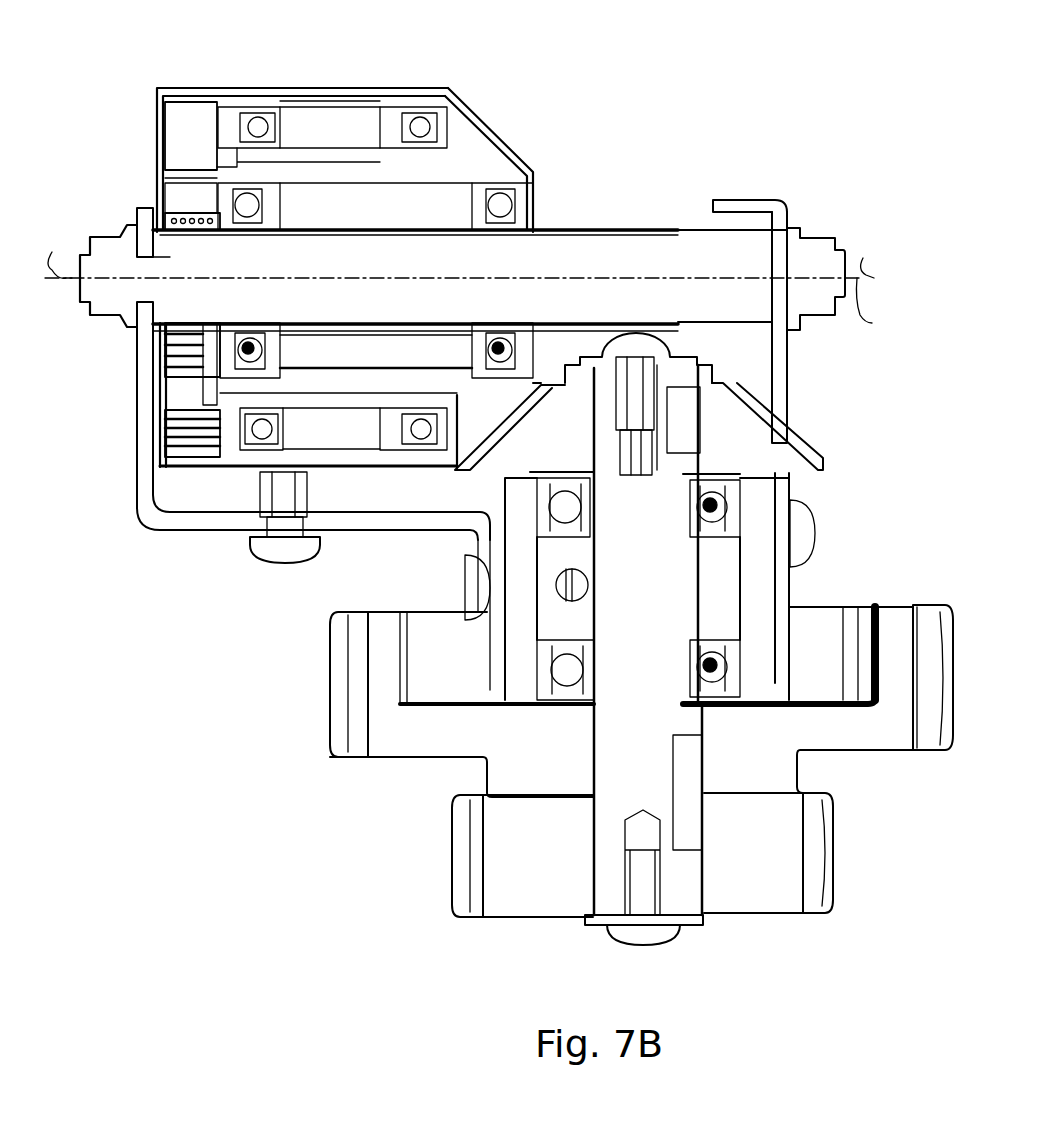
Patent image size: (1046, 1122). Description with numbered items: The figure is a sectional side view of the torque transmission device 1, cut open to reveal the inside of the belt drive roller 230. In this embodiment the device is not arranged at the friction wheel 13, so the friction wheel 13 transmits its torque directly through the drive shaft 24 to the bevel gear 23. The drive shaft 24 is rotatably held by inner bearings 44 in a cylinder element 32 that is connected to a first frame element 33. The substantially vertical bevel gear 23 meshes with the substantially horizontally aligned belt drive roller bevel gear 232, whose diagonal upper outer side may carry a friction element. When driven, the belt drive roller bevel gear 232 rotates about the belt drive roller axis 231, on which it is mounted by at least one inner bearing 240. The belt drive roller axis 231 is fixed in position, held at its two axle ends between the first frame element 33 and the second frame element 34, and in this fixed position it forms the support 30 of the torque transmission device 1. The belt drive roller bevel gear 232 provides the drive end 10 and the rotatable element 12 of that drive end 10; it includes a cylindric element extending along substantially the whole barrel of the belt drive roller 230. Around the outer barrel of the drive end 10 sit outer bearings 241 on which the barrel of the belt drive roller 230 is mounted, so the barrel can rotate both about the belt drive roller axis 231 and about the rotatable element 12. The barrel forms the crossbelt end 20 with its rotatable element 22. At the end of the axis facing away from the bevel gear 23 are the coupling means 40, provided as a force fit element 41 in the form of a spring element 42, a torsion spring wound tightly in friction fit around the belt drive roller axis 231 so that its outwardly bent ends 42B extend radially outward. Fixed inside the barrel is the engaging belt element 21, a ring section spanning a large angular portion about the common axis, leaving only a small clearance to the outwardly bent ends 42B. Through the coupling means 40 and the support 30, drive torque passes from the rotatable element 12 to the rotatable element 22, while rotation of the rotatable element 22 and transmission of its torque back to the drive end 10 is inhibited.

The torque transmission device 1 is at (499, 474).
The drive end 10 is at (524, 154).
The rotatable element 12 is at (524, 154).
The belt drive roller bevel gear 232 is at (526, 108).
The friction wheel 13 is at (812, 869).
The crossbelt end 20 is at (334, 283).
The rotatable element 22 is at (334, 283).
The belt drive roller 230 is at (346, 97).
The engaging belt element 21 is at (180, 137).
The bevel gear 23 is at (800, 447).
The drive shaft 24 is at (606, 740).
The support 30 is at (462, 243).
The belt drive roller axis 231 is at (645, 230).
The cylinder element 32 is at (757, 583).
The first frame element 33 is at (192, 522).
The second frame element 34 is at (813, 378).
The coupling means 40 is at (231, 335).
The force fit element 41 is at (231, 335).
The spring element 42 is at (180, 231).
The outwardly bent ends 42B is at (183, 357).
The inner bearings 44 is at (696, 522).
The inner bearing 240 is at (262, 205).
The outer bearings 241 is at (262, 128).